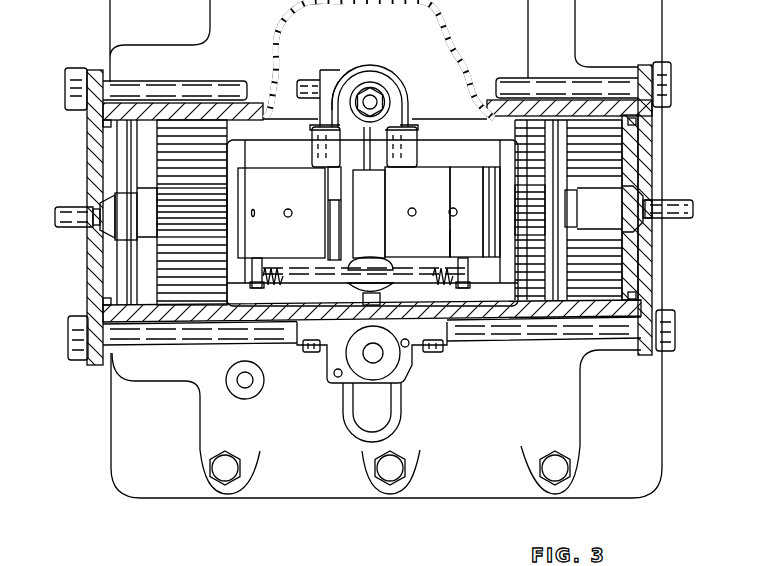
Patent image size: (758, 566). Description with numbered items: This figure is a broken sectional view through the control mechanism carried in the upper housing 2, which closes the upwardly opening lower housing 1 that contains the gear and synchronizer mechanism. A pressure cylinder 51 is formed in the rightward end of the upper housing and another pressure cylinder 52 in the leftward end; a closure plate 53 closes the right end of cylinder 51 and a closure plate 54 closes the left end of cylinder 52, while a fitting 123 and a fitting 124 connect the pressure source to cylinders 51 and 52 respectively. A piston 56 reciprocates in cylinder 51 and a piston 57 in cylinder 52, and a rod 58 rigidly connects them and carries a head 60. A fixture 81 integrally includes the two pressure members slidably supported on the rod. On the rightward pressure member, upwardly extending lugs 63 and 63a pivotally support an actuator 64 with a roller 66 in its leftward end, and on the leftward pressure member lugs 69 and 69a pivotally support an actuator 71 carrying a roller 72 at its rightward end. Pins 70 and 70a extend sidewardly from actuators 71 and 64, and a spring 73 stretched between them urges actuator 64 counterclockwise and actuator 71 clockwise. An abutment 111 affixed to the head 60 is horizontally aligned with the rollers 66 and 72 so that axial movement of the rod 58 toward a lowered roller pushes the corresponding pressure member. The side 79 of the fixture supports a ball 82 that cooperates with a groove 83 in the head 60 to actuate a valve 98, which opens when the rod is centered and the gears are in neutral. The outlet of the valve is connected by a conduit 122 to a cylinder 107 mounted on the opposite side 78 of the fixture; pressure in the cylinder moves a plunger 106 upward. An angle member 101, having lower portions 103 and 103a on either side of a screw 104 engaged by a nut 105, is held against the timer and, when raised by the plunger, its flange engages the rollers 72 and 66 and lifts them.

The lower housing 1 is at (106, 441).
The upper housing 2 is at (195, 456).
The pressure cylinder 51 is at (590, 120).
The pressure cylinder 52 is at (181, 127).
The closure plate 53 is at (633, 273).
The closure plate 54 is at (95, 258).
The piston 56 is at (560, 177).
The piston 57 is at (152, 248).
The rod 58 is at (578, 204).
The head 60 is at (375, 215).
The lug 63 is at (447, 158).
The lug 63a is at (450, 258).
The actuator 64 is at (433, 200).
The roller 66 is at (417, 143).
The lug 69 is at (240, 156).
The lug 69a is at (283, 270).
The pin 70 is at (262, 270).
The pin 70a is at (468, 270).
The actuator 71 is at (268, 187).
The roller 72 is at (320, 147).
The spring 73 is at (275, 286).
The side 78 is at (434, 165).
The side 79 is at (437, 282).
The fixture 81 is at (490, 131).
The ball 82 is at (383, 291).
The groove 83 is at (351, 262).
The valve 98 is at (385, 355).
The angle member 101 is at (367, 142).
The lower portion 103 is at (398, 98).
The lower portion 103a is at (348, 85).
The screw 104 is at (374, 96).
The nut 105 is at (350, 103).
The plunger 106 is at (369, 80).
The cylinder 107 is at (382, 75).
The abutment 111 is at (347, 200).
The conduit 122 is at (303, 85).
The fitting 123 is at (681, 207).
The fitting 124 is at (73, 212).